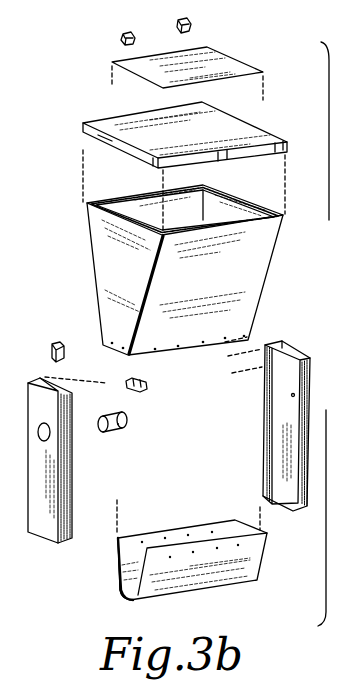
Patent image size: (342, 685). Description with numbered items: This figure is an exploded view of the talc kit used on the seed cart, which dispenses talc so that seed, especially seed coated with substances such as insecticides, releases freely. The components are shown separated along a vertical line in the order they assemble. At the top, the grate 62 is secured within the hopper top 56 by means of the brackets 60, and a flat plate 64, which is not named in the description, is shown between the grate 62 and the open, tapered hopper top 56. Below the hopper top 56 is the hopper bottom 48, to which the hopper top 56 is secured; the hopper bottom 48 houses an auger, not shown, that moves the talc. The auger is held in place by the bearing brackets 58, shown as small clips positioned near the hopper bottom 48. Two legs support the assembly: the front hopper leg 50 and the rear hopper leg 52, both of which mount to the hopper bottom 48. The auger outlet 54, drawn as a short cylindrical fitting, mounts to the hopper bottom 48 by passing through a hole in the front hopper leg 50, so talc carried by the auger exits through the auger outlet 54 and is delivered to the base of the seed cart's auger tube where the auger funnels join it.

The hopper bottom 48 is at (178, 533).
The front hopper leg 50 is at (62, 476).
The rear hopper leg 52 is at (292, 443).
The auger outlet 54 is at (120, 435).
The hopper top 56 is at (237, 263).
The bearing brackets 58 is at (58, 343).
The brackets 60 is at (181, 25).
The grate 62 is at (113, 63).
The top plate 64 is at (112, 133).